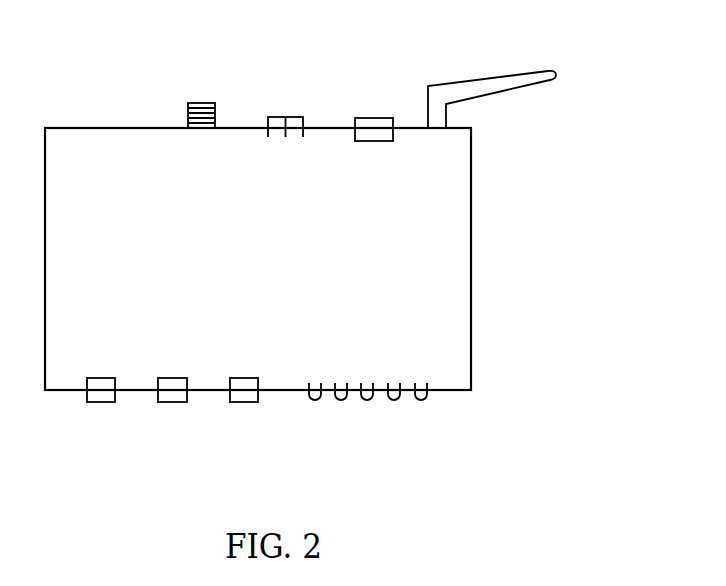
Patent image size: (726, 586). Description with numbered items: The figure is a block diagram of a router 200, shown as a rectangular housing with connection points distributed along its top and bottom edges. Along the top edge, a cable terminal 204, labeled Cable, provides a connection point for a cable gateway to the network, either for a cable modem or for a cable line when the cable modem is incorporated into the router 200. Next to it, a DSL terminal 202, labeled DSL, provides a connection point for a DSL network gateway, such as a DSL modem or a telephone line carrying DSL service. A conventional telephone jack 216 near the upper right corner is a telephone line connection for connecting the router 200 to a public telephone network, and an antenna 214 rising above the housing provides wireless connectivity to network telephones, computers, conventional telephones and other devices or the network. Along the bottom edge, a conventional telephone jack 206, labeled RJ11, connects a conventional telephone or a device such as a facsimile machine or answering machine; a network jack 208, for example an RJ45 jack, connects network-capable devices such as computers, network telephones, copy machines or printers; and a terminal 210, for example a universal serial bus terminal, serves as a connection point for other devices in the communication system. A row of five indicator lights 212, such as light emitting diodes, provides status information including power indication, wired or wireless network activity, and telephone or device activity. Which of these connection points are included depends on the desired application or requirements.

The router 200 is at (514, 451).
The DSL terminal 202 is at (291, 114).
The cable terminal 204 is at (208, 99).
The conventional telephone jack 206 is at (98, 403).
The network jack 208 is at (172, 403).
The terminal 210 is at (244, 403).
The indicator light 212 is at (410, 401).
The antenna 214 is at (462, 80).
The conventional telephone jack 216 is at (378, 116).